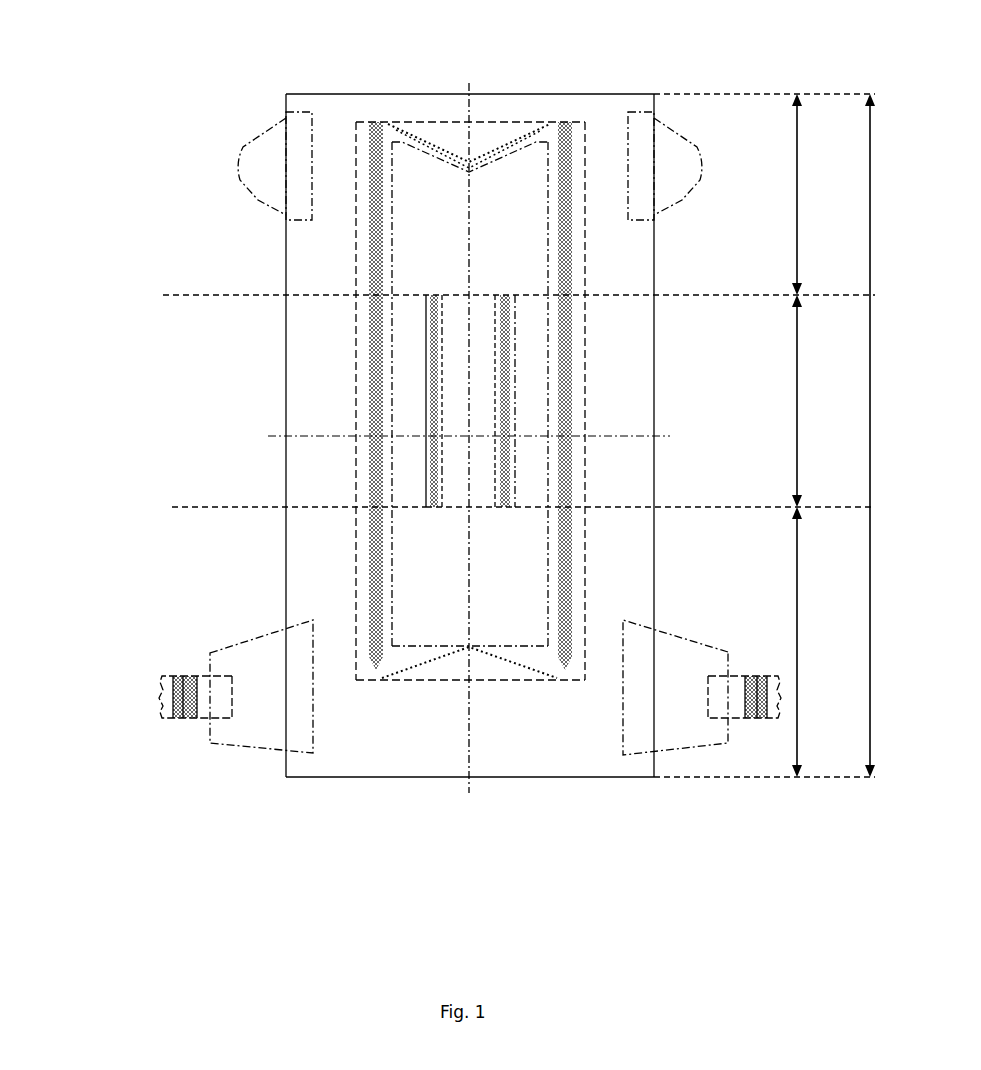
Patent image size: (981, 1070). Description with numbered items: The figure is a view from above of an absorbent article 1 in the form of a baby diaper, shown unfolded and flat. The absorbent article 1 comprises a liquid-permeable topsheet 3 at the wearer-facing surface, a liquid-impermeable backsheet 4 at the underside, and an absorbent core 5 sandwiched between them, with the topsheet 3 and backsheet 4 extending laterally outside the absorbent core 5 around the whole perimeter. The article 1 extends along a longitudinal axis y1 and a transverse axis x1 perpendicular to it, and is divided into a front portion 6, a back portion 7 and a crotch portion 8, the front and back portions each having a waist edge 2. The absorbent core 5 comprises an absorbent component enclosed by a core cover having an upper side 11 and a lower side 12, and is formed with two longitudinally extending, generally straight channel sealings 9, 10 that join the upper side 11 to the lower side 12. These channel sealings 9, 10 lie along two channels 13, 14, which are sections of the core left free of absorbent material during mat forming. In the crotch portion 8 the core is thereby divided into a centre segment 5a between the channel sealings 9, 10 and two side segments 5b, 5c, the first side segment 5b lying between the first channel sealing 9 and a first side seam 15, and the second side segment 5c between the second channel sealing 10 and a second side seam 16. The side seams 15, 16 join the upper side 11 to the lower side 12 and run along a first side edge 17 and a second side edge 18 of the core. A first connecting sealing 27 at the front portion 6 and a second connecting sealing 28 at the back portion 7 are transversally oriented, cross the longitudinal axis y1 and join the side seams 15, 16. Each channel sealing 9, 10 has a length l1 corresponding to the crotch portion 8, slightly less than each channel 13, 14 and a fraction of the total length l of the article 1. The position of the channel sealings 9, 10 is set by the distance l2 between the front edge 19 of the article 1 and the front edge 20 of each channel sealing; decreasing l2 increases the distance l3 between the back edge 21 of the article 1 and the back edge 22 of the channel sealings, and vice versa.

The absorbent article 1 is at (724, 65).
The waist edge 2 is at (590, 94).
The topsheet 3 is at (312, 388).
The backsheet 4 is at (322, 585).
The absorbent core 5 is at (387, 122).
The centre segment 5a is at (480, 372).
The first side segment 5b is at (400, 350).
The second side segment 5c is at (535, 499).
The front portion 6 is at (104, 175).
The back portion 7 is at (104, 634).
The crotch portion 8 is at (100, 405).
The first channel sealing 9 is at (433, 487).
The second channel sealing 10 is at (510, 490).
The upper side 11 is at (575, 377).
The lower side 12 is at (580, 265).
The first channel 13 is at (425, 420).
The second channel 14 is at (510, 404).
The first side seam 15 is at (375, 322).
The second side seam 16 is at (568, 230).
The first side edge 17 is at (357, 550).
The second side edge 18 is at (585, 575).
The front edge 19 is at (318, 94).
The front edge of channel sealing 20 is at (430, 295).
The back edge 21 is at (368, 777).
The back edge of channel sealings 22 is at (502, 507).
The first connecting sealing 27 is at (430, 142).
The second connecting sealing 28 is at (495, 663).
The transverse axis x1 is at (658, 434).
The longitudinal axis y1 is at (475, 86).
The total length l is at (883, 435).
The length of channel sealing l1 is at (809, 401).
The distance between article front edge and channel sealing front edge l2 is at (809, 194).
The distance between article back edge and channel sealing back edge l3 is at (809, 642).